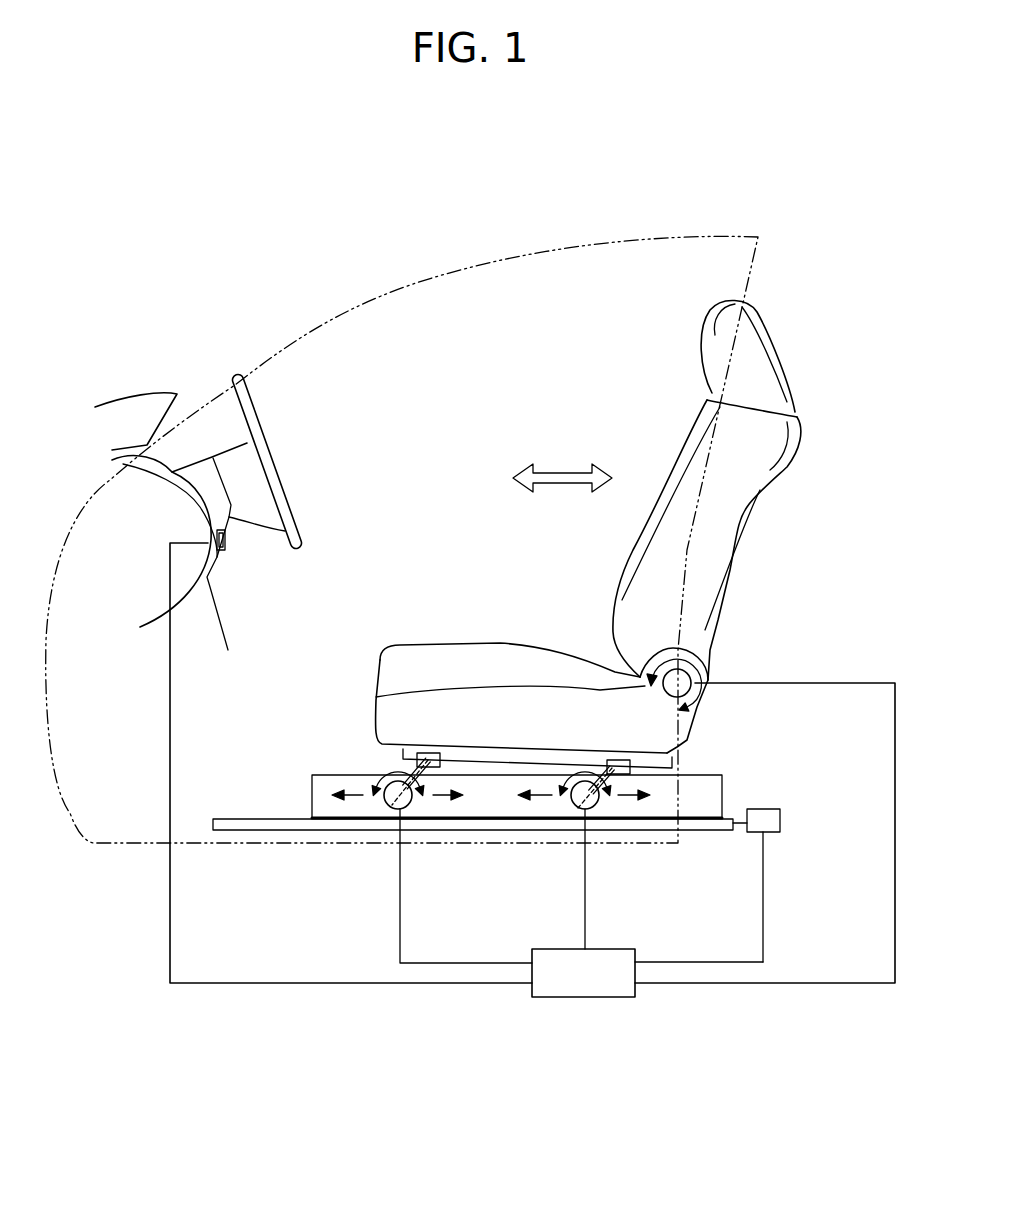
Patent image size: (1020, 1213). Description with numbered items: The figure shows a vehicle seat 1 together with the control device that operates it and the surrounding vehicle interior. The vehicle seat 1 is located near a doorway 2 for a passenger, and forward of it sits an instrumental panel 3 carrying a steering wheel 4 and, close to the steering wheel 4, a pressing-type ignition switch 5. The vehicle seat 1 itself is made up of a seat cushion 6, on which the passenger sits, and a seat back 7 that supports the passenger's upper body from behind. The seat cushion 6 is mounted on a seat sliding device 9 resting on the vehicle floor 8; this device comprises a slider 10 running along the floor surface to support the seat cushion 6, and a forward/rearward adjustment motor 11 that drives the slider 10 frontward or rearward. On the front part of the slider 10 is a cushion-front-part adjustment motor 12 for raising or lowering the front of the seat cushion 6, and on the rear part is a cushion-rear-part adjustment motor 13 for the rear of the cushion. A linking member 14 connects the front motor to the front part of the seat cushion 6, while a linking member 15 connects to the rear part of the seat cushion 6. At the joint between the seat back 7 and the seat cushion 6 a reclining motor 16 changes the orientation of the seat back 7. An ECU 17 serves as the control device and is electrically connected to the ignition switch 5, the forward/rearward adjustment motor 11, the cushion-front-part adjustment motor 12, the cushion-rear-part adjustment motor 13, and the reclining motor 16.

The vehicle seat 1 is at (815, 390).
The doorway 2 is at (411, 285).
The instrumental panel 3 is at (130, 405).
The steering wheel 4 is at (253, 417).
The pressing-type ignition switch 5 is at (227, 545).
The seat cushion 6 is at (483, 650).
The seat back 7 is at (723, 525).
The vehicle floor 8 is at (245, 818).
The seat sliding device 9 is at (735, 782).
The slider 10 is at (497, 813).
The forward/rearward adjustment motor 11 is at (782, 823).
The cushion-front-part adjustment motor 12 is at (390, 807).
The cushion-rear-part adjustment motor 13 is at (600, 807).
The linking member 14 is at (423, 753).
The linking member 15 is at (613, 760).
The reclining motor 16 is at (683, 672).
The ECU 17 is at (608, 1000).